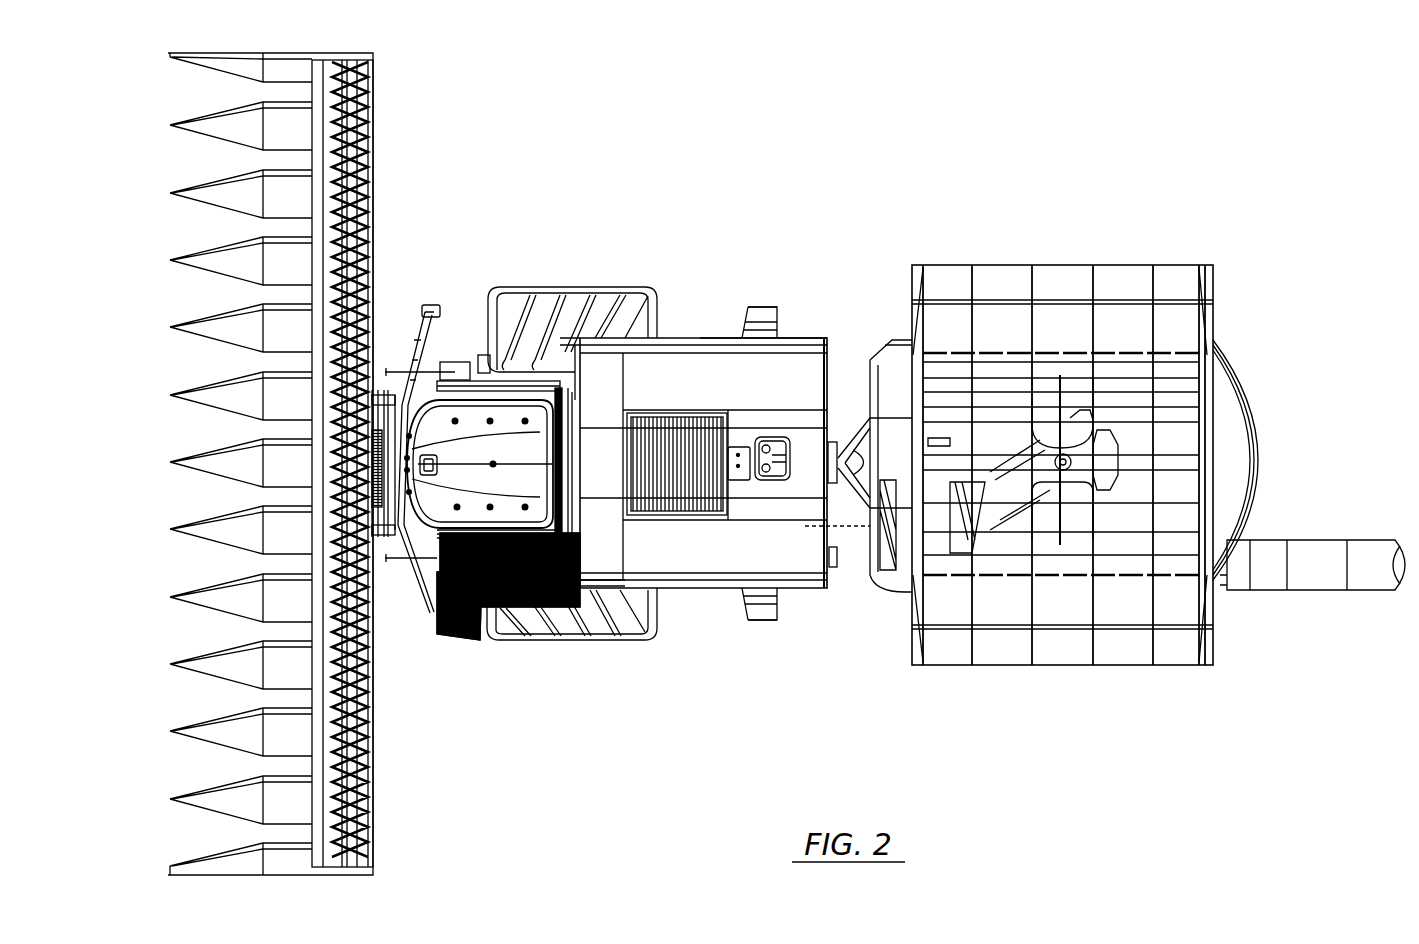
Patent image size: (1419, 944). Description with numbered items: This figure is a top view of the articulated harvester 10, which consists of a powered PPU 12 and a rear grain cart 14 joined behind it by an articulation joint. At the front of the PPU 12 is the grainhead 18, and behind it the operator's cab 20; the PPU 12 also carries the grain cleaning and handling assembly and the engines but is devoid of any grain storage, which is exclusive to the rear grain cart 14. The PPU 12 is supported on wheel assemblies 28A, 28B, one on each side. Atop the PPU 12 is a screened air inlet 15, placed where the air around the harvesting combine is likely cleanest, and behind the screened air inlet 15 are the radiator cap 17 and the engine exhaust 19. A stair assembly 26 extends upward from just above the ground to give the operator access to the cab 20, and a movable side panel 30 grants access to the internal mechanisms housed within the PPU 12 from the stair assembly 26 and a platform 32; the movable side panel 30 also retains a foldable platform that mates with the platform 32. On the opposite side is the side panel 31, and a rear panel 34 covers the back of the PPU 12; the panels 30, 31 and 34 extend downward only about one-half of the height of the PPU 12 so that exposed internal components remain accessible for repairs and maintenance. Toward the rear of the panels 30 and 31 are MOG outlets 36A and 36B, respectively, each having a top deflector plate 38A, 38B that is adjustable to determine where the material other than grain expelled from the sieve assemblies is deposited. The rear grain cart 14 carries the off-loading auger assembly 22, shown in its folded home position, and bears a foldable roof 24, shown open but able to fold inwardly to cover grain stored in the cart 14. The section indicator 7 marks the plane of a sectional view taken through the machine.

The section line 7- 7 is at (410, 520).
The articulated harvester 10 is at (708, 158).
The powered PPU 12 is at (596, 204).
The rear grain cart 14 is at (1270, 247).
The screened air inlet 15 is at (665, 425).
The radiator cap 17 is at (733, 450).
The grainhead 18 is at (376, 152).
The engine exhaust 19 is at (770, 470).
The operator's cab 20 is at (453, 385).
The off-loading auger assembly 22 is at (1322, 555).
The foldable roof 24 is at (1060, 285).
The stair assembly 26 is at (452, 637).
The wheel assembly 28A is at (600, 628).
The wheel assembly 28B is at (580, 300).
The movable side panel 30 is at (690, 593).
The side panel 31 is at (695, 338).
The platform 32 is at (528, 608).
The rear panel 34 is at (830, 365).
The MOG outlet 36A is at (764, 628).
The MOG outlet 36B is at (761, 300).
The top deflector plate 38A is at (775, 615).
The top deflector plate 38B is at (774, 320).